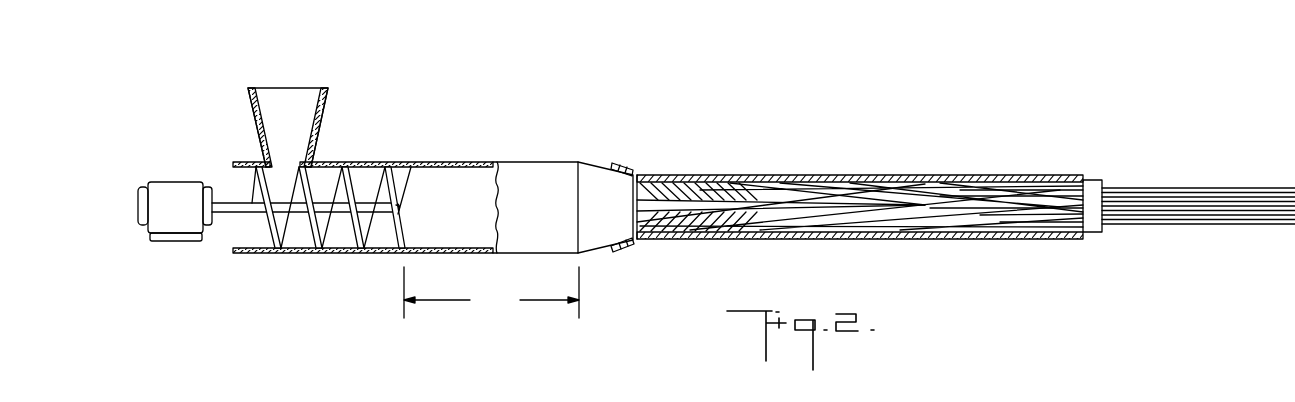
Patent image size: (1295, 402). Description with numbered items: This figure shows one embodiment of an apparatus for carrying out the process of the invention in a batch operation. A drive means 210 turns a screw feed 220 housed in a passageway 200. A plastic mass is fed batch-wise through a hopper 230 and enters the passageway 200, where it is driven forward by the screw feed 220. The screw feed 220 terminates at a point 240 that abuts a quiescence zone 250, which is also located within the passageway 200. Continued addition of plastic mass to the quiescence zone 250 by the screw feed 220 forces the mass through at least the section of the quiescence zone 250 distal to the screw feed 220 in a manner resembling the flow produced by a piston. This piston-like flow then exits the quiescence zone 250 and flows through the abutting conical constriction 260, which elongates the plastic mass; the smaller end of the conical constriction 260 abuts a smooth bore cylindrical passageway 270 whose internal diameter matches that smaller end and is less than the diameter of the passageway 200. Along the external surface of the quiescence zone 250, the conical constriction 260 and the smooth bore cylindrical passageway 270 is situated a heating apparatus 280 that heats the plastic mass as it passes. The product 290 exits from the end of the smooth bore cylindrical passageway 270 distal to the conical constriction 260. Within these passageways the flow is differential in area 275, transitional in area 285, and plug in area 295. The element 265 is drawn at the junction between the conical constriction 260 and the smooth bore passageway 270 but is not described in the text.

The passageway 200 is at (517, 162).
The drive means 210 is at (170, 193).
The screw feed 220 is at (352, 232).
The hopper 230 is at (300, 93).
The point 240 is at (402, 208).
The quiescence zone 250 is at (491, 292).
The conical constriction 260 is at (597, 253).
The clamp 265 is at (638, 172).
The smooth bore cylindrical passageway 270 is at (1097, 180).
The area 275 is at (717, 205).
The heating apparatus 280 is at (875, 176).
The area 285 is at (793, 223).
The product 290 is at (1187, 217).
The area 295 is at (992, 222).